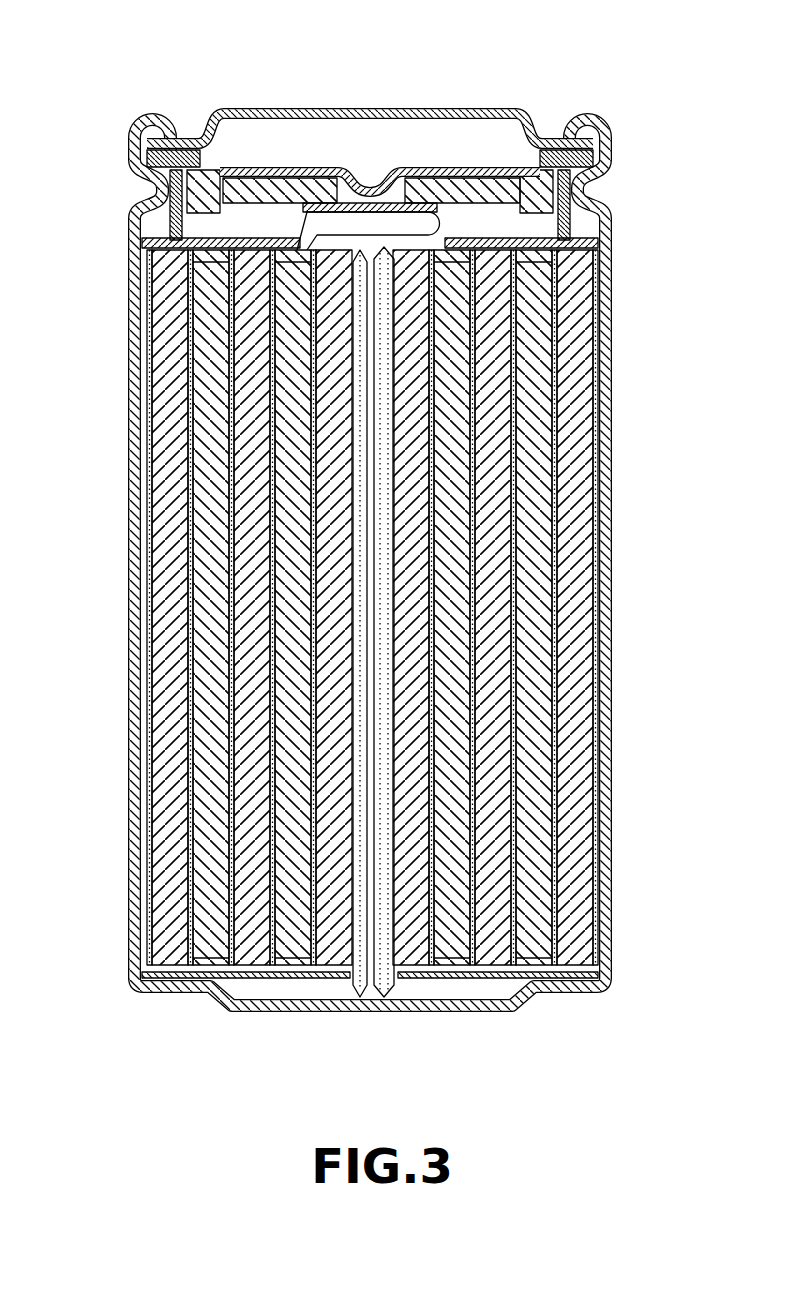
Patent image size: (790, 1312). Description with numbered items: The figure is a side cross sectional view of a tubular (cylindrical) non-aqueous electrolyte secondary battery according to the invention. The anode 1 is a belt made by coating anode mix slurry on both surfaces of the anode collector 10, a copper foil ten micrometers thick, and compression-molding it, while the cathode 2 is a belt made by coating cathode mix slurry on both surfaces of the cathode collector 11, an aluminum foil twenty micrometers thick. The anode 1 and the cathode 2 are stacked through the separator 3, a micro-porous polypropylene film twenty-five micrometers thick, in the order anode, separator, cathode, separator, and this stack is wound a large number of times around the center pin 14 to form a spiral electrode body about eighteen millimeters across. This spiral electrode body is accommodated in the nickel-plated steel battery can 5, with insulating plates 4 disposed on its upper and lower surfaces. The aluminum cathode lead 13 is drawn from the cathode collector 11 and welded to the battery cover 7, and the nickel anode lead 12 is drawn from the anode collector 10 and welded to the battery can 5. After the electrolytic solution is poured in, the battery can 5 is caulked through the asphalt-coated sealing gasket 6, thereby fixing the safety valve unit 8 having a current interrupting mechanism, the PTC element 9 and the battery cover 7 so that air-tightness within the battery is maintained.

The anode 1 is at (578, 369).
The cathode 2 is at (533, 541).
The separator 3 is at (551, 720).
The insulating plate 4 is at (566, 996).
The battery can 5 is at (130, 408).
The sealing gasket 6 is at (137, 126).
The battery cover 7 is at (371, 108).
The safety valve unit 8 is at (420, 170).
The PTC element 9 is at (613, 154).
The anode collector 10 is at (160, 586).
The cathode collector 11 is at (205, 765).
The anode lead 12 is at (233, 1010).
The cathode lead 13 is at (440, 226).
The center pin 14 is at (398, 1010).